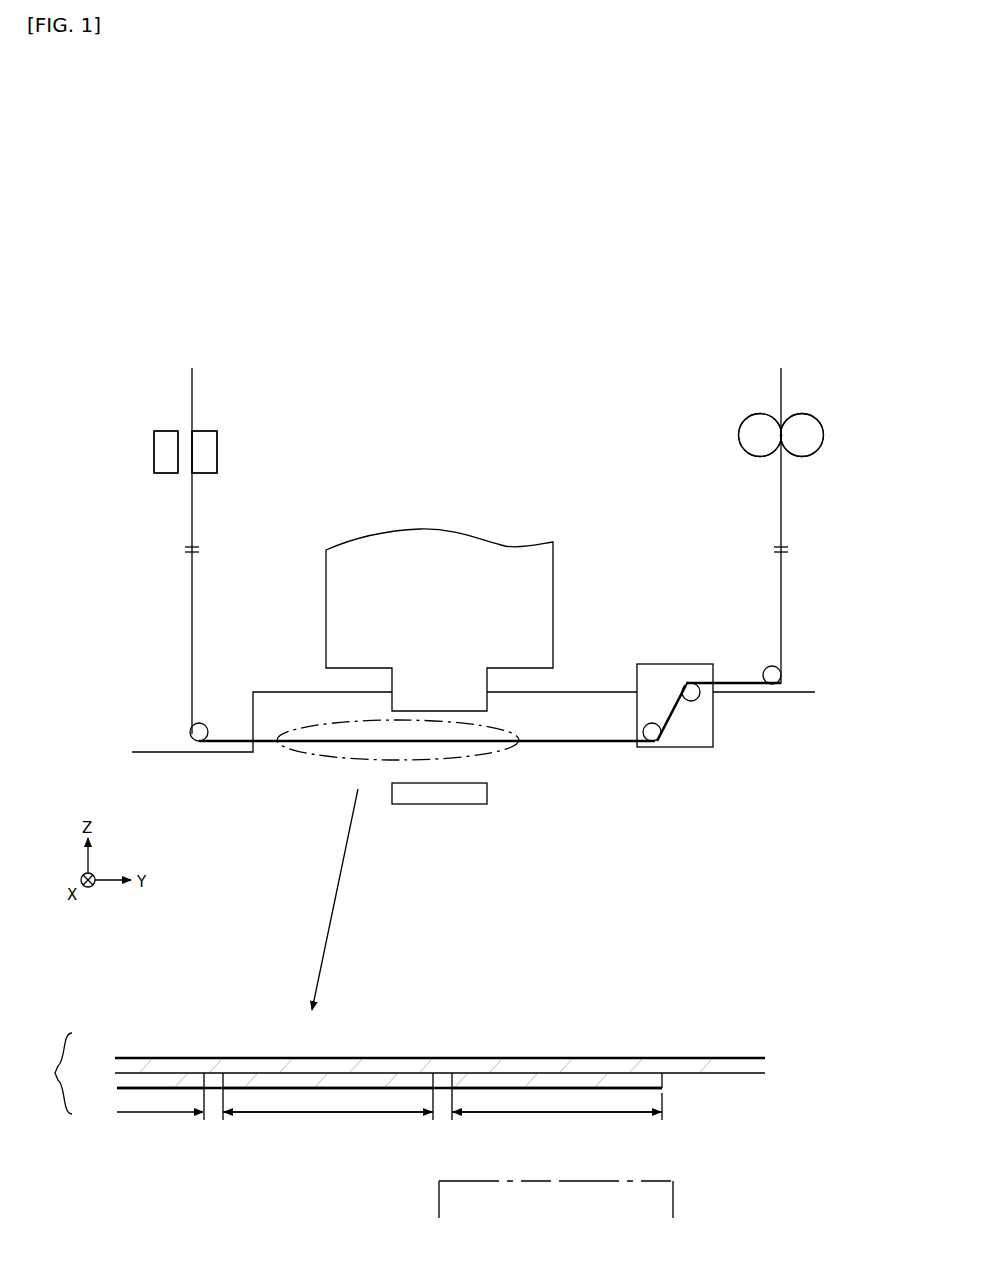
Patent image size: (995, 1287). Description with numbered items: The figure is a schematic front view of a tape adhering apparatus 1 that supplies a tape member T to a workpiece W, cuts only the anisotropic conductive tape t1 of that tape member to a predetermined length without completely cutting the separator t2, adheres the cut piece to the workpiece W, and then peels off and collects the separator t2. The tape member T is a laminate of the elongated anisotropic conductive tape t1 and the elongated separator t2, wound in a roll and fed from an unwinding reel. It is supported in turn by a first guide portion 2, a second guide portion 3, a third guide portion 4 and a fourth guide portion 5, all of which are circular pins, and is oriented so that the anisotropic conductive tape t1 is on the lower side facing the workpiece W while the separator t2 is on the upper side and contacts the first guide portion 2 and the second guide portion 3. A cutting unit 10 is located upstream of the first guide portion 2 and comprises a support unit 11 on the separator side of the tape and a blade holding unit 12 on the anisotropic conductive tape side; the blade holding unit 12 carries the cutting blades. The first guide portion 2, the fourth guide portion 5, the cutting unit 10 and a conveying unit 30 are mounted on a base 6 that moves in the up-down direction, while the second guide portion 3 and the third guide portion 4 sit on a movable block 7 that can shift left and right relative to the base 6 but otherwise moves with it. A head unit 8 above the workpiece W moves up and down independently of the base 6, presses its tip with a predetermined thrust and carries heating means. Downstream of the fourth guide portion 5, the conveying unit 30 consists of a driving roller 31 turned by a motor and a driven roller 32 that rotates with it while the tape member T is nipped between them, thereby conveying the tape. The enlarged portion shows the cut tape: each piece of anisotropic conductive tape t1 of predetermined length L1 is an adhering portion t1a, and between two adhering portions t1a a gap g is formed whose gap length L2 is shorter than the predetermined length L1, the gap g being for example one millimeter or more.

The tape adhering apparatus 1 is at (767, 296).
The first guide portion 2 is at (194, 742).
The second guide portion 3 is at (655, 744).
The third guide portion 4 is at (693, 697).
The fourth guide portion 5 is at (778, 694).
The base 6 is at (228, 748).
The movable block 7 is at (694, 738).
The head unit 8 is at (543, 602).
The cutting unit 10 is at (151, 421).
The support unit 11 is at (212, 458).
The blade holding unit 12 is at (158, 452).
The conveying unit 30 is at (806, 396).
The driving roller 31 is at (755, 430).
The driven roller 32 is at (817, 442).
The tape member T is at (557, 742).
The workpiece W is at (465, 797).
The gap g is at (218, 1074).
The anisotropic conductive tape t1 is at (118, 1083).
The separator t2 is at (118, 1063).
The adhering portion t1a is at (142, 1083).
The predetermined length L1 is at (442, 1118).
The gap length L2 is at (389, 1128).